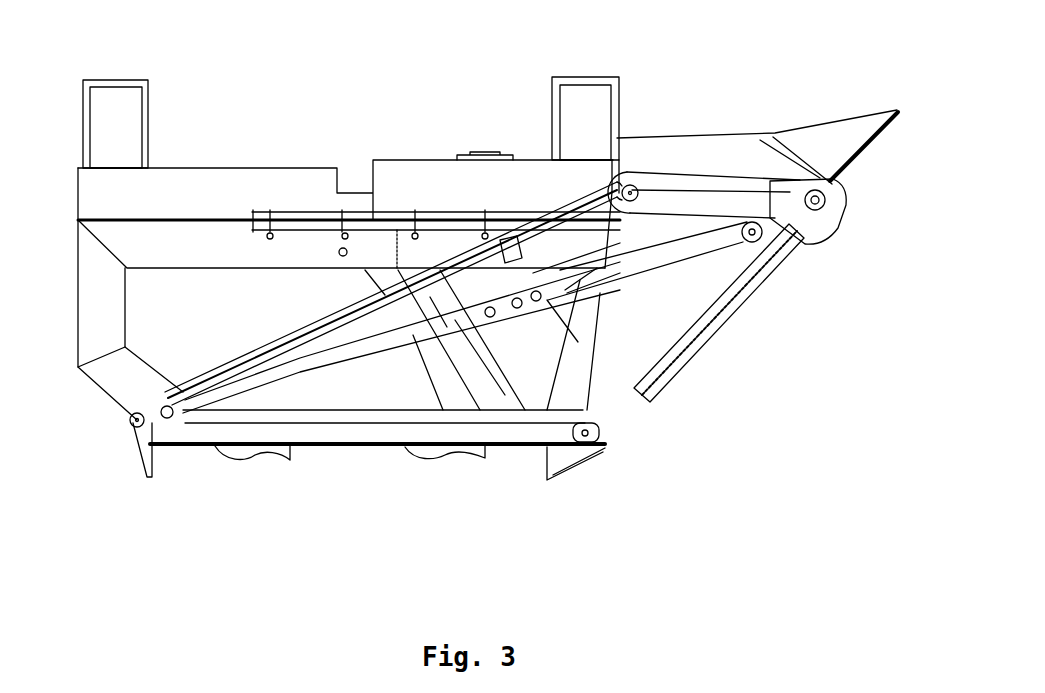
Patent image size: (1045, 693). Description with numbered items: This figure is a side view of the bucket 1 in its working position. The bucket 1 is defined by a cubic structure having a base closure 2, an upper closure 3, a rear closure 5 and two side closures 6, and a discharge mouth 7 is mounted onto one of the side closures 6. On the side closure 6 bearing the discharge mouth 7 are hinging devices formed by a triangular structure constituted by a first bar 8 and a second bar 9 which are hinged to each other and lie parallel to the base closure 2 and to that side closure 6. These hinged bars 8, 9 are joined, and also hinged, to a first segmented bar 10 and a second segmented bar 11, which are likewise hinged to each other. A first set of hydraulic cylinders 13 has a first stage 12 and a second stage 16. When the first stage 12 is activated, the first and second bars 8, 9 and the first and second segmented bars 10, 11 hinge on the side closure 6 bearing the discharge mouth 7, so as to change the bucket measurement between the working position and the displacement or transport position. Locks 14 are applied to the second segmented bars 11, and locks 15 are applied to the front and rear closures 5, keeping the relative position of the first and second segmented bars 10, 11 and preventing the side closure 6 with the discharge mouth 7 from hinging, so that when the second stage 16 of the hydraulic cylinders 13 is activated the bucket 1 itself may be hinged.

The bucket 1 is at (208, 80).
The base closure 2 is at (373, 447).
The upper closure 3 is at (308, 162).
The rear closure 5 is at (128, 385).
The side closure 6 is at (77, 292).
The discharge mouth 7 is at (895, 103).
The first bar 8 is at (307, 435).
The second bar 9 is at (670, 347).
The first segmented bar 10 is at (468, 450).
The second segmented bar 11 is at (707, 245).
The first stage 12 is at (215, 363).
The first set of hydraulic cylinders 13 is at (543, 450).
The locks 14 is at (590, 387).
The locks 15 is at (672, 272).
The second stage 16 is at (277, 338).